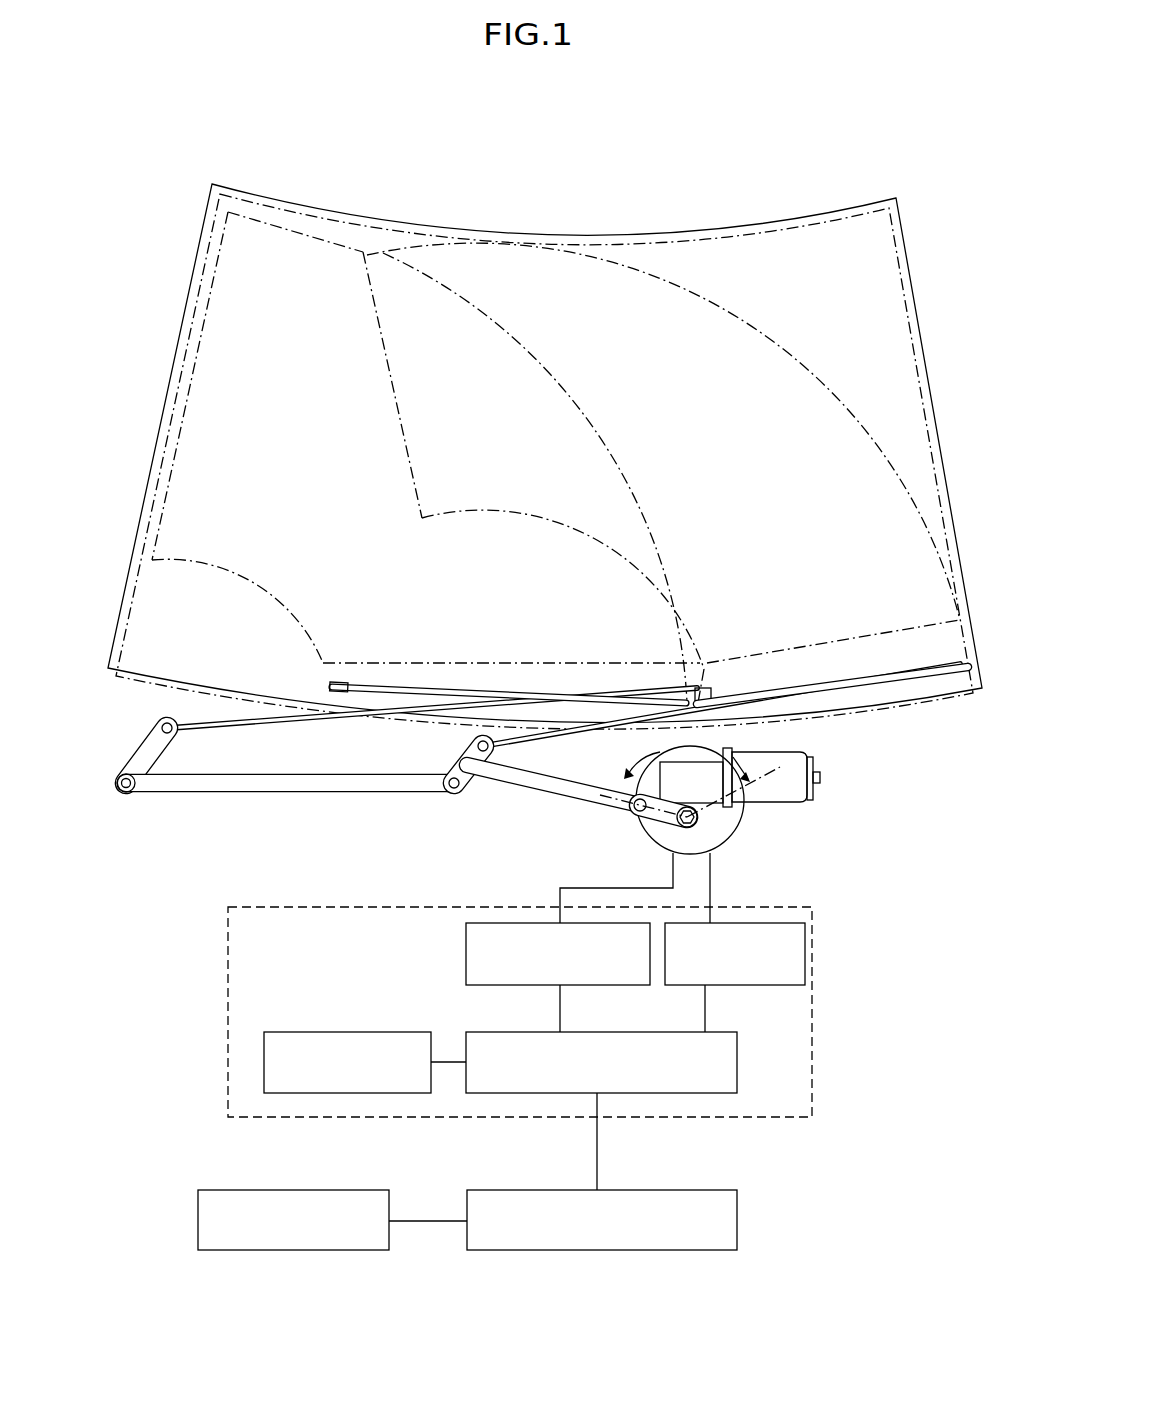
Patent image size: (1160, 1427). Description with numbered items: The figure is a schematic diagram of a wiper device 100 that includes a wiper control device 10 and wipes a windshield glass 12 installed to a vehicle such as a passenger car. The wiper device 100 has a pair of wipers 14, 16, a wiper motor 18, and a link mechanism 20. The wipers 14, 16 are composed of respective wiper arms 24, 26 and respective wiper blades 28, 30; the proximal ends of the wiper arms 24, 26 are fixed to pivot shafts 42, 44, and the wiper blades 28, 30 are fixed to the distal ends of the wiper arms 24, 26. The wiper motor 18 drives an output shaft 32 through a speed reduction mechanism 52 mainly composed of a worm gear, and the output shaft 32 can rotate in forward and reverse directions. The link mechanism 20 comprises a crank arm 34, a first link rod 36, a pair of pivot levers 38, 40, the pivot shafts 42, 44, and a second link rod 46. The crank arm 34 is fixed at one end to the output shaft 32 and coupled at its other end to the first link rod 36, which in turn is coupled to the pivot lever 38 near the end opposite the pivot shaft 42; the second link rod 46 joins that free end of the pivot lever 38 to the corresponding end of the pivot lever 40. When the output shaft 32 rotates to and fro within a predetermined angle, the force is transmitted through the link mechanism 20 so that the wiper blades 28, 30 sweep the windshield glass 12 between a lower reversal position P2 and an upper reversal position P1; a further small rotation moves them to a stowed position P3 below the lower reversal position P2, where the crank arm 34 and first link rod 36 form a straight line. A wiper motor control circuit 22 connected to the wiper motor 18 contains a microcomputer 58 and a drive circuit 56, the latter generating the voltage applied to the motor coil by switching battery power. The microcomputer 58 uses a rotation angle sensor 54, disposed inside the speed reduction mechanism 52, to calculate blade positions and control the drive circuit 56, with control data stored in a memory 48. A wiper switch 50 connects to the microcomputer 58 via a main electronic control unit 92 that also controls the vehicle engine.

The wiper device 100 is at (545, 427).
The windshield glass 12 is at (580, 232).
The wiper control device 10 is at (527, 872).
The wiper 14 is at (910, 662).
The wiper 16 is at (606, 690).
The wiper motor 18 is at (719, 802).
The link mechanism 20 is at (353, 797).
The wiper motor control circuit 22 is at (534, 989).
The wiper arm 24 is at (706, 663).
The wiper arm 26 is at (218, 717).
The wiper blade 28 is at (858, 677).
The wiper blade 30 is at (553, 690).
The output shaft 32 is at (712, 830).
The crank arm 34 is at (650, 818).
The first link rod 36 is at (537, 795).
The pivot lever 38 is at (458, 765).
The pivot lever 40 is at (135, 758).
The pivot shaft 42 is at (470, 745).
The pivot shaft 44 is at (158, 727).
The second link rod 46 is at (300, 792).
The memory 48 is at (263, 1062).
The wiper switch 50 is at (198, 1221).
The speed reduction mechanism 52 is at (740, 806).
The rotation angle sensor 54 is at (488, 922).
The drive circuit 56 is at (806, 952).
The microcomputer 58 is at (740, 1062).
The main electronic control unit (ECU) 92 is at (600, 1252).
The upper reversal position P1 is at (200, 382).
The lower reversal position P2 is at (460, 660).
The stowed position P3 is at (330, 692).